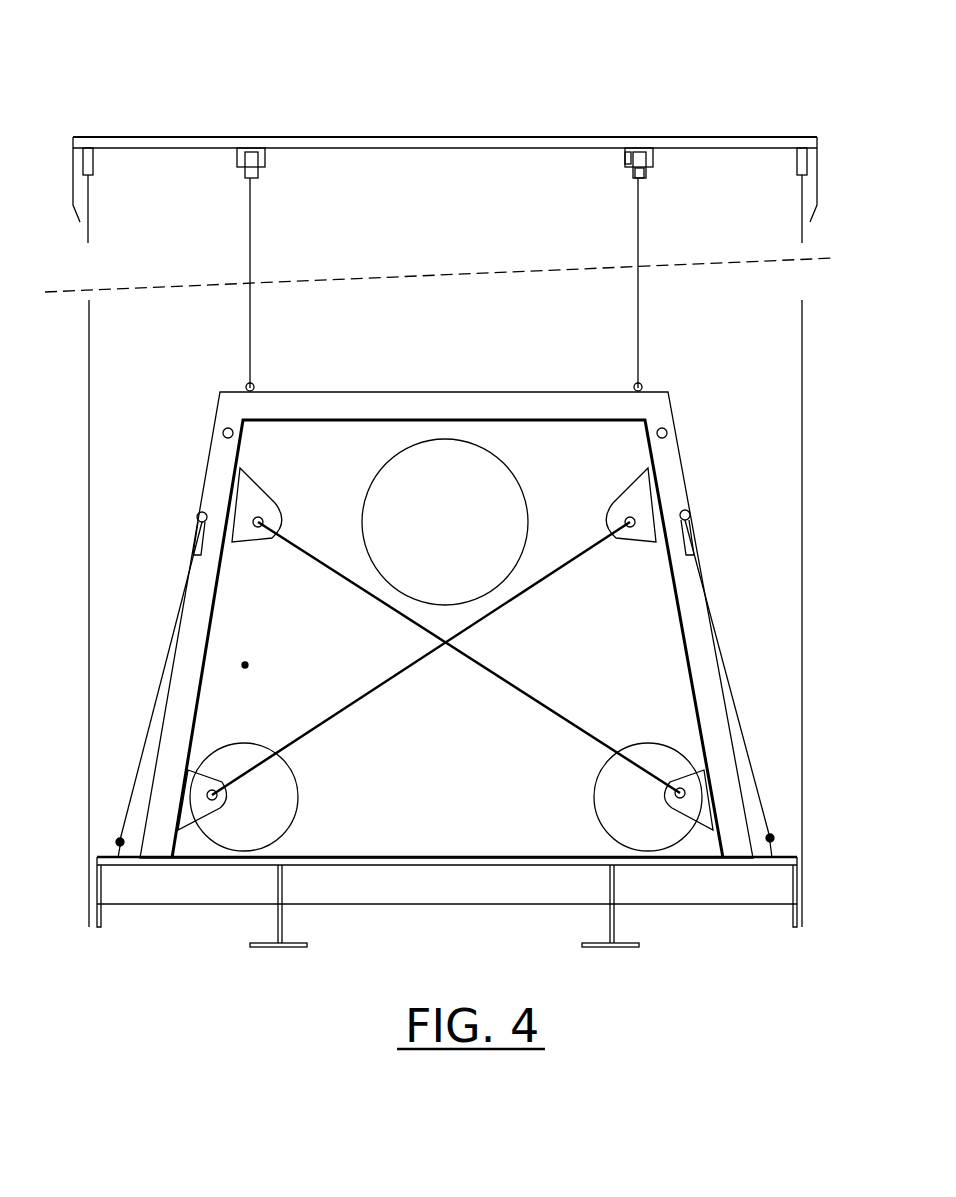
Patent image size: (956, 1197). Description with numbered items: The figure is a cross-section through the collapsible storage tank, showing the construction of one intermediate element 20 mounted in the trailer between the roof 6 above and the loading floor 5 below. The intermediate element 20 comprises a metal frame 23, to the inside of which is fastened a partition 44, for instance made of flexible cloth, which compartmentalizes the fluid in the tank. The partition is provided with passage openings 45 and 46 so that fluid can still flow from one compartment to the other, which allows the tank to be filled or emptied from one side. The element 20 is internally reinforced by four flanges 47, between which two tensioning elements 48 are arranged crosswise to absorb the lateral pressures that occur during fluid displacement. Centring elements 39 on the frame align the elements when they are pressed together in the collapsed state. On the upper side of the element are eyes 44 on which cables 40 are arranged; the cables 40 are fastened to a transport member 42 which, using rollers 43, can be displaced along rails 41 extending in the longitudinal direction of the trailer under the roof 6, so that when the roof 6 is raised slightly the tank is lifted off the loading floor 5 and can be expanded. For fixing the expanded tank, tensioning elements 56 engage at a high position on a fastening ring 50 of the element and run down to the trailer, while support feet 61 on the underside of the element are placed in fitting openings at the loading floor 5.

The loading floor 5 is at (470, 870).
The roof 6 is at (537, 137).
The intermediate element 20 is at (165, 447).
The metal frame 23 is at (395, 395).
The centring element 39 is at (222, 433).
The cable 40 is at (252, 245).
The rail 41 is at (265, 158).
The transport member 42 is at (636, 172).
The roller 43 is at (625, 162).
The partition 44 is at (252, 385).
The passage opening 45 is at (483, 472).
The passage opening 46 is at (285, 805).
The flange 47 is at (250, 500).
The tensioning element 48 is at (535, 600).
The fastening ring 50 is at (690, 512).
The tensioning element 56 is at (740, 718).
The support foot 61 is at (150, 865).